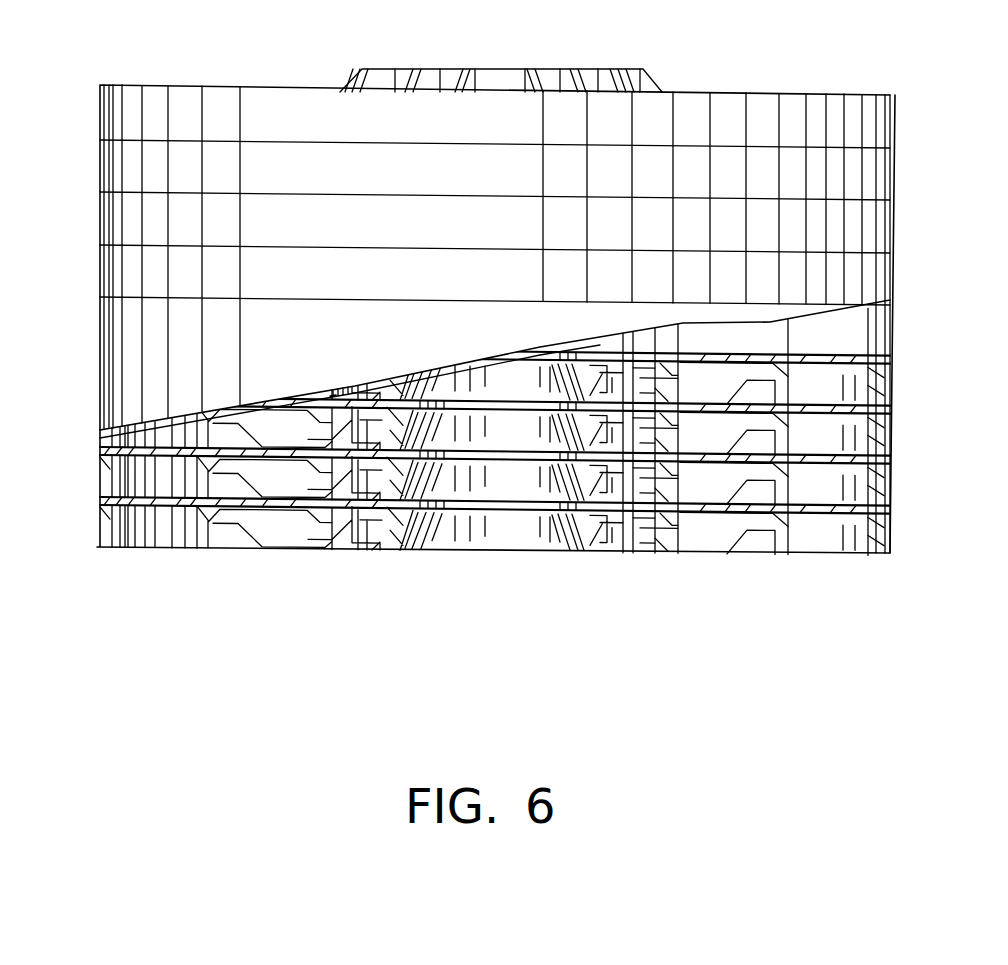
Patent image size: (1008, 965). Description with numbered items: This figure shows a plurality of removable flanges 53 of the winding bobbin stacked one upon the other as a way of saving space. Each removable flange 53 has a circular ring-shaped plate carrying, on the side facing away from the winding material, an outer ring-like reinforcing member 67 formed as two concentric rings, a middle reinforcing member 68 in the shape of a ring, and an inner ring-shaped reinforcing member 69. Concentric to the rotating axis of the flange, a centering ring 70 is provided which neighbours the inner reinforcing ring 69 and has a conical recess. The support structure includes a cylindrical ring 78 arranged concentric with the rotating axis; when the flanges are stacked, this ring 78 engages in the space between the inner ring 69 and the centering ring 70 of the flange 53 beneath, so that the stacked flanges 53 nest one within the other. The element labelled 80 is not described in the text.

The removable flange 53 is at (113, 263).
The outer reinforcing member 67 is at (98, 548).
The middle reinforcing member 68 is at (206, 548).
The inner reinforcing member 69 is at (358, 548).
The centering ring 70 is at (593, 473).
The cylindrical ring 78 is at (578, 70).
The top cap 80 is at (348, 77).